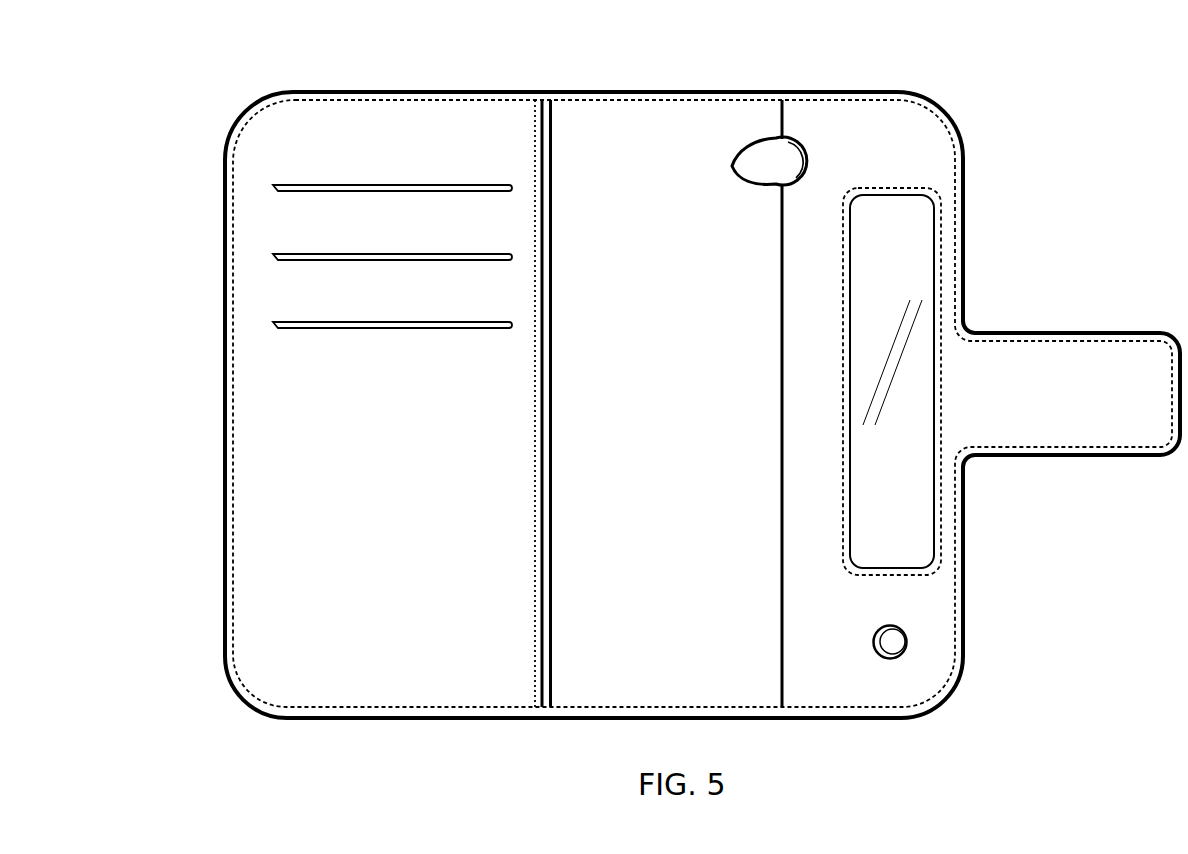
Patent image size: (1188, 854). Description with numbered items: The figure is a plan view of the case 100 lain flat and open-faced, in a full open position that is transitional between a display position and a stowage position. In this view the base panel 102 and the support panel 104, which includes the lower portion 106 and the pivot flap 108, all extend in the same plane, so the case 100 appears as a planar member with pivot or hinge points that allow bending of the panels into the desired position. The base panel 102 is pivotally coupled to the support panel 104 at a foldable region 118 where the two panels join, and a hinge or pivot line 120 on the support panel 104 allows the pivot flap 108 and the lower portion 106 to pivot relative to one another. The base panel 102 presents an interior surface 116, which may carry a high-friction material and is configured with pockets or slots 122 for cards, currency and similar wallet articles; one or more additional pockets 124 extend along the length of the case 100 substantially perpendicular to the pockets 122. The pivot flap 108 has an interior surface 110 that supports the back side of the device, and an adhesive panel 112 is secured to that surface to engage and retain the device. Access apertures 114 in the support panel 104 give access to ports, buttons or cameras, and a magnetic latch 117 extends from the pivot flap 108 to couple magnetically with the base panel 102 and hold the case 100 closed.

The case 100 is at (214, 84).
The base panel 102 is at (348, 748).
The support panel 104 is at (870, 745).
The lower portion 106 is at (733, 595).
The pivot flap 108 is at (957, 162).
The interior surface 110 is at (838, 619).
The adhesive panel 112 is at (905, 470).
The access aperture 114 is at (778, 158).
The interior surface 116 is at (398, 596).
The magnetic latch 117 is at (1084, 401).
The foldable region 118 is at (652, 92).
The hinge or pivot line 120 is at (779, 92).
The pockets or slots 122 is at (274, 191).
The additional pockets 124 is at (552, 339).